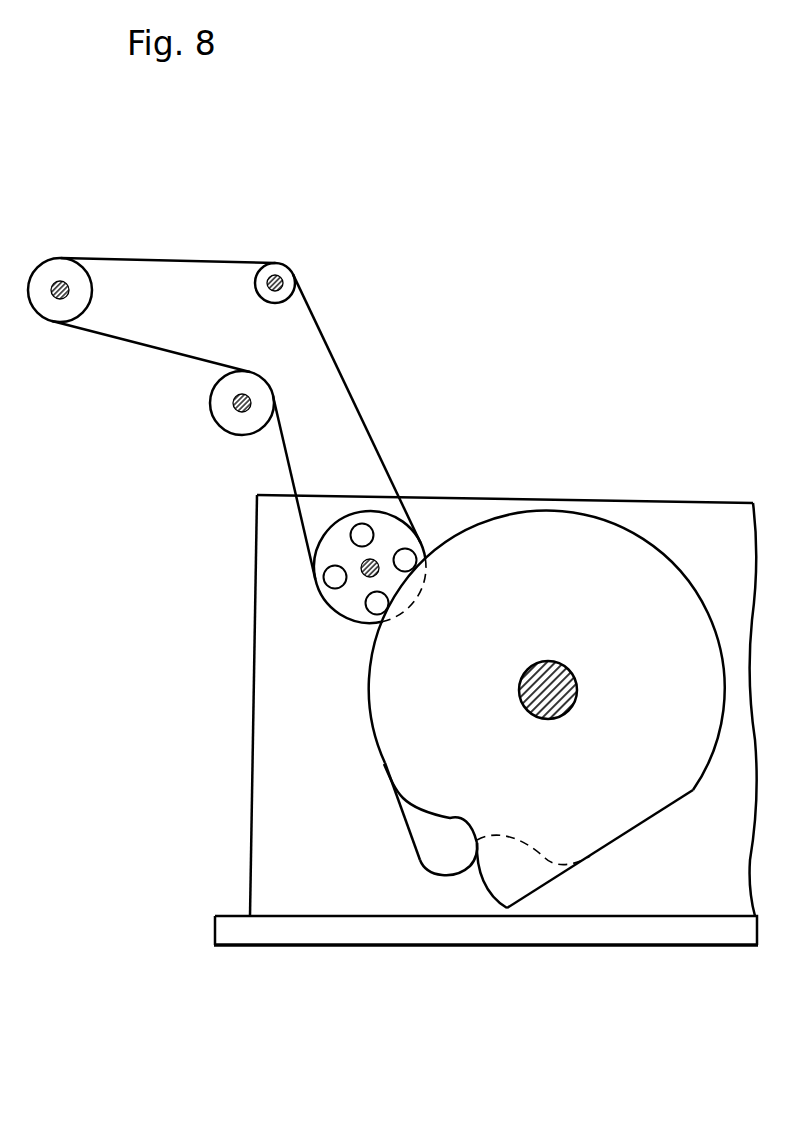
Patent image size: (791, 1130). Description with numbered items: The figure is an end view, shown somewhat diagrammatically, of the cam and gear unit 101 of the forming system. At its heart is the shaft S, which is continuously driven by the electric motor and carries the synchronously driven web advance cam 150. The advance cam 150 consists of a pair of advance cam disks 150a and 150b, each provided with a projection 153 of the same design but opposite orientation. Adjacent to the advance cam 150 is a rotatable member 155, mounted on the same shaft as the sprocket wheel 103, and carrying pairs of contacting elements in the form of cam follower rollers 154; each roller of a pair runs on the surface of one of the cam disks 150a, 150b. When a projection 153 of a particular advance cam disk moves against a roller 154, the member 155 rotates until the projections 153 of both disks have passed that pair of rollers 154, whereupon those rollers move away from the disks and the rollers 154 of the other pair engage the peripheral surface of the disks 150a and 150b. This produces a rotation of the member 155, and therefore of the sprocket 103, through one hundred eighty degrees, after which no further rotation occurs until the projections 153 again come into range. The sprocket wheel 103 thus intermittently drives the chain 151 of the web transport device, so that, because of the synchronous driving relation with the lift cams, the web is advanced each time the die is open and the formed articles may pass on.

The cam and gear unit 101 is at (724, 537).
The sprocket wheel 103 is at (228, 357).
The chain 151 is at (343, 382).
The rotatable member 155 is at (295, 473).
The cam follower rollers 154 is at (406, 560).
The web advance cam 150 is at (554, 608).
The advance cam disk 150a is at (657, 587).
The advance cam disk 150b is at (589, 510).
The projection 153 is at (518, 883).
The shaft S is at (572, 698).